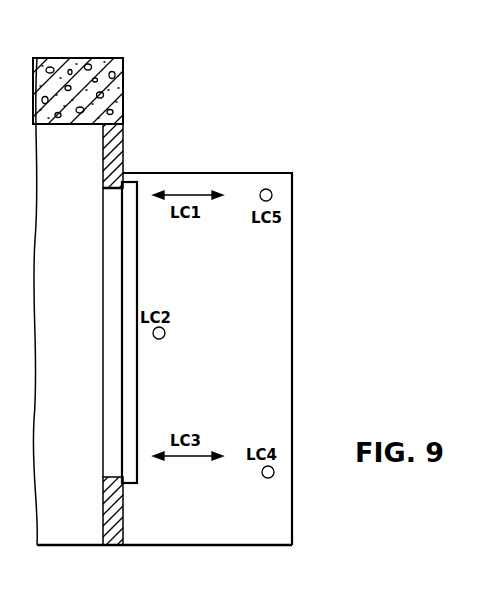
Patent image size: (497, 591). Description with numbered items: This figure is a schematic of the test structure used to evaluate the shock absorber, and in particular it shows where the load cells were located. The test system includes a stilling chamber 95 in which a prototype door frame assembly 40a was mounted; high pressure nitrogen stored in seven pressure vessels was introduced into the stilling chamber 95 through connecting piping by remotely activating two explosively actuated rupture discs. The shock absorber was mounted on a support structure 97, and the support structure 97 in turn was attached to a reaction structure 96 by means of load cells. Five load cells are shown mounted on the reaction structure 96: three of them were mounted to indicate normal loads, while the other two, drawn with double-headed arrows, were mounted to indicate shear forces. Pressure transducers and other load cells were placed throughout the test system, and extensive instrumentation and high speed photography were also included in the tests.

The support structure 97 is at (80, 62).
The stilling chamber 95 is at (87, 152).
The prototype door frame assembly 40a is at (131, 280).
The reaction structure 96 is at (275, 300).